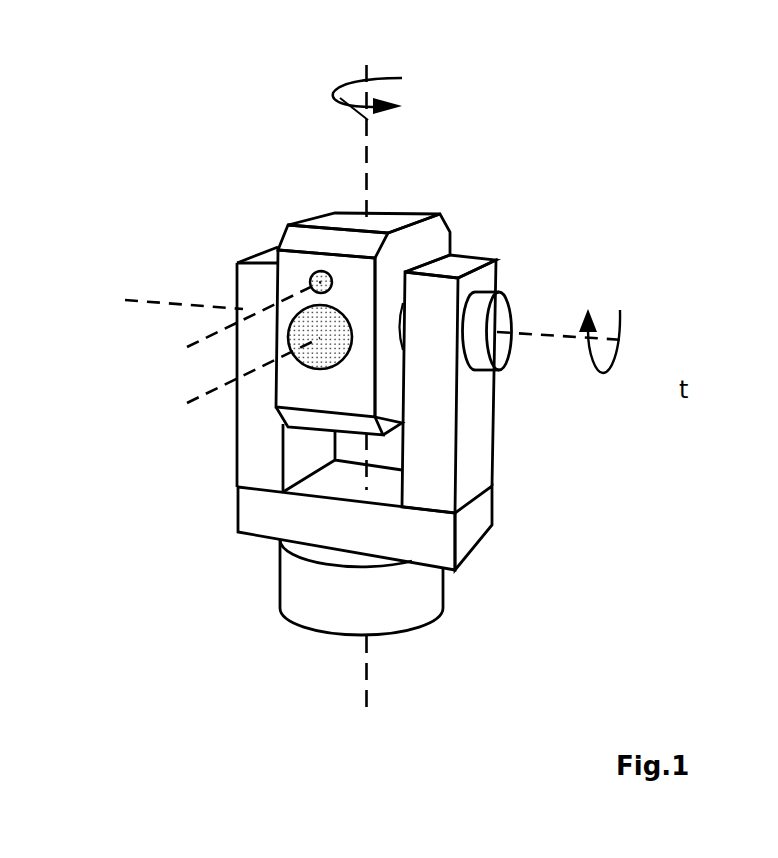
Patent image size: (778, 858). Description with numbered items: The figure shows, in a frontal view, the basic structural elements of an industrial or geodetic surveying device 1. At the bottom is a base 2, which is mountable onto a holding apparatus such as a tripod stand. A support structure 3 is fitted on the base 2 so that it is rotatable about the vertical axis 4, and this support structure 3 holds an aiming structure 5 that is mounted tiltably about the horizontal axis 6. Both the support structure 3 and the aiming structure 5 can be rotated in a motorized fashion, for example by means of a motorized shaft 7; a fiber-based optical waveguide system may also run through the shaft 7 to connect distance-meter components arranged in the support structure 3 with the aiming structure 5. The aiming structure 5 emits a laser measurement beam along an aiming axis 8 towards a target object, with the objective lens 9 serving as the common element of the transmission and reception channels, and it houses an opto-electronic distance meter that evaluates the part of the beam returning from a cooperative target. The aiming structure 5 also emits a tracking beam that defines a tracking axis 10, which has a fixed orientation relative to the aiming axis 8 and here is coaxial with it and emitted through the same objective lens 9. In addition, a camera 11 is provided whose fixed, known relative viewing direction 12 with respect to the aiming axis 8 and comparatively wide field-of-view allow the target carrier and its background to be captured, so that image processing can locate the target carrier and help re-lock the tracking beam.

The surveying device 1 is at (170, 55).
The base 2 is at (300, 593).
The support structure 3 is at (477, 462).
The vertical axis 4 is at (333, 95).
The aiming structure 5 is at (437, 233).
The horizontal axis 6 is at (623, 340).
The motorized shaft 7 is at (500, 303).
The aiming axis 8 is at (193, 397).
The objective lens 9 is at (318, 365).
The tracking axis 10 is at (253, 370).
The camera 11 is at (312, 275).
The relative viewing direction 12 is at (210, 333).